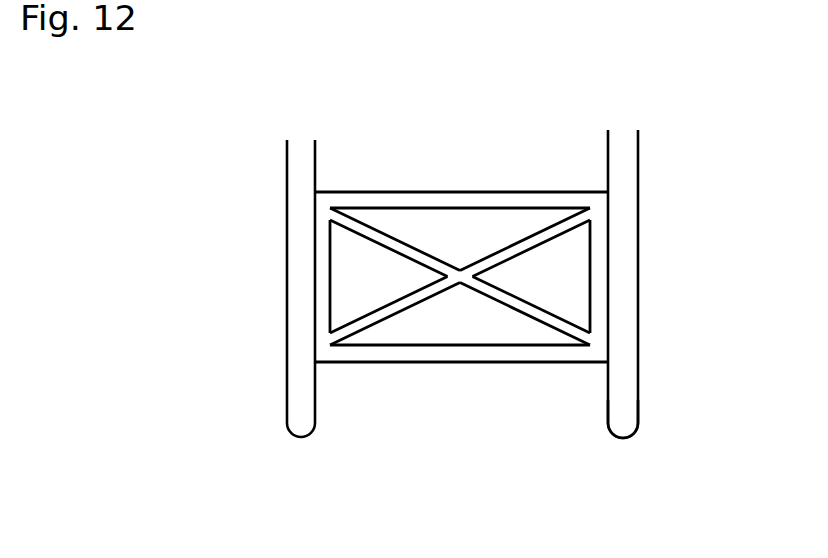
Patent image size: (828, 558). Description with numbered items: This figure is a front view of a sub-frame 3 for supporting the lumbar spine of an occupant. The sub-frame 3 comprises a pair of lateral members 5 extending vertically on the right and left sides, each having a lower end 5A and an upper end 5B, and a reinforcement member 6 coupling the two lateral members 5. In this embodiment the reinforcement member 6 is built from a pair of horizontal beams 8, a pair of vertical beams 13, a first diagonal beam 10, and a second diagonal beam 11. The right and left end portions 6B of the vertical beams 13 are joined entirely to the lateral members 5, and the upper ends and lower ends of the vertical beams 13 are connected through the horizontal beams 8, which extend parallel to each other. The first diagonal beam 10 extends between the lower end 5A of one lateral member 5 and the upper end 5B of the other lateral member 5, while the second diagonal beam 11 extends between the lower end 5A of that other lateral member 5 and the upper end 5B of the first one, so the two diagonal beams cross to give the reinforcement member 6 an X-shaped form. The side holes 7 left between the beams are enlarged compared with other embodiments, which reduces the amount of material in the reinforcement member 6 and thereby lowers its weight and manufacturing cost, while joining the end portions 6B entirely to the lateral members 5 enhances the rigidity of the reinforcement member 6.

The sub-frame 3 is at (455, 377).
The lateral member 5 is at (623, 258).
The lower end of lateral member 5A is at (655, 432).
The upper end of lateral member 5B is at (651, 157).
The reinforcement member 6 is at (489, 181).
The end portion of reinforcement member 6B is at (327, 380).
The side hole 7 is at (405, 228).
The horizontal beam 8 is at (538, 200).
The first diagonal beam 10 is at (558, 222).
The second diagonal beam 11 is at (560, 320).
The vertical beam 13 is at (325, 278).